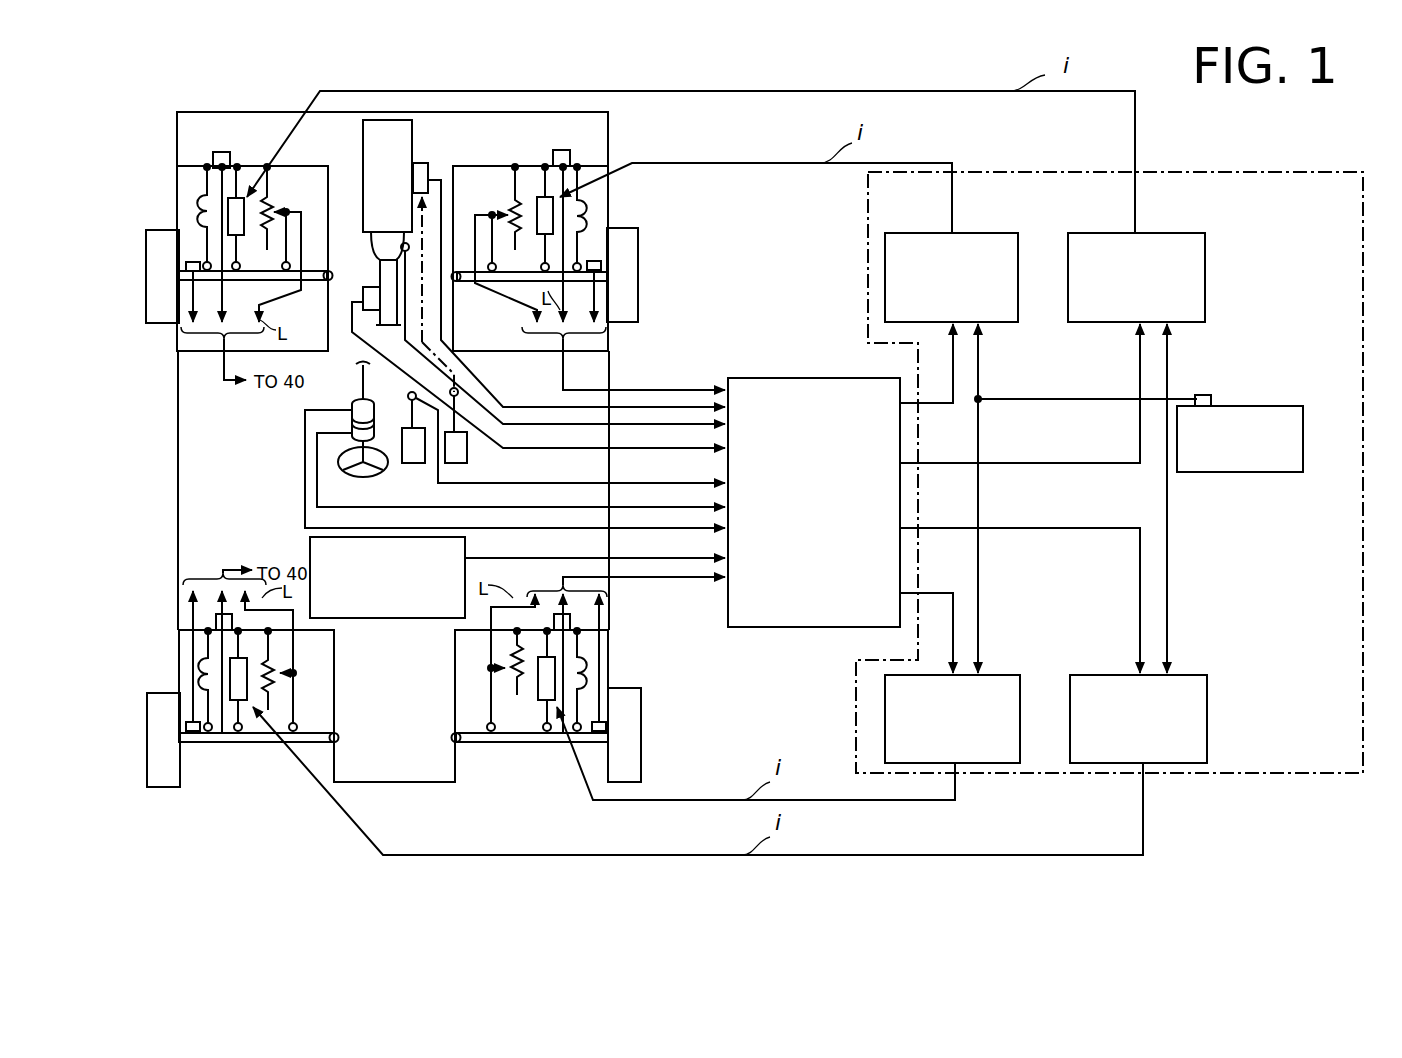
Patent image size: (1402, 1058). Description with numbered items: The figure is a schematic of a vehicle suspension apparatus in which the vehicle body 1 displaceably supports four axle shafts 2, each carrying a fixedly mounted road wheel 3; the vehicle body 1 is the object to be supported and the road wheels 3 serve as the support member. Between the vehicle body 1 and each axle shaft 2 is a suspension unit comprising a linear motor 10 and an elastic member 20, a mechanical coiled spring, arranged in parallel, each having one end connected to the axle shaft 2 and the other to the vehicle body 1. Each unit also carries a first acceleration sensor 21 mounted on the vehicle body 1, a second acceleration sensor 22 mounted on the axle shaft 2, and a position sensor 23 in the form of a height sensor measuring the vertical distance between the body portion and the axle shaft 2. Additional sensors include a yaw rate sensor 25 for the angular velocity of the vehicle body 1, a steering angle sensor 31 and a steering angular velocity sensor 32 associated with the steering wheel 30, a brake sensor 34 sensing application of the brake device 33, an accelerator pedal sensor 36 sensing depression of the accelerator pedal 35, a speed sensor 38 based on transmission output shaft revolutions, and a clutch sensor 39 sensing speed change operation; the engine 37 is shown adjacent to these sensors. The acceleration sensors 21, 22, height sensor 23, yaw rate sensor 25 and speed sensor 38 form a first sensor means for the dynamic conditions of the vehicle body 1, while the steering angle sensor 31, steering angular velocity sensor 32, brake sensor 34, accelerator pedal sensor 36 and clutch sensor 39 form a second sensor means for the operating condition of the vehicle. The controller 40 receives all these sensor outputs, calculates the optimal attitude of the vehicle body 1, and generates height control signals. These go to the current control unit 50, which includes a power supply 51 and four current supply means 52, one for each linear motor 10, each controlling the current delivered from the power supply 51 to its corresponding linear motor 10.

The vehicle body 1 is at (375, 782).
The axle shaft 2 is at (300, 285).
The road wheel 3 is at (148, 293).
The linear motor 10 is at (240, 197).
The elastic member 20 is at (200, 216).
The first acceleration sensor 21 is at (213, 160).
The second acceleration sensor 22 is at (186, 265).
The position sensor 23 is at (270, 205).
The yaw rate sensor 25 is at (310, 548).
The steering wheel 30 is at (340, 462).
The steering angle sensor 31 is at (356, 402).
The steering angular velocity sensor 32 is at (360, 432).
The brake device 33 is at (405, 463).
The brake sensor 34 is at (408, 396).
The accelerator pedal 35 is at (467, 452).
The accelerator pedal sensor 36 is at (414, 163).
The engine 37 is at (363, 152).
The speed sensor 38 is at (363, 295).
The clutch sensor 39 is at (365, 233).
The controller 40 is at (790, 378).
The current control unit 50 is at (1240, 172).
The power supply 51 is at (1232, 406).
The current supply means 52 is at (975, 233).